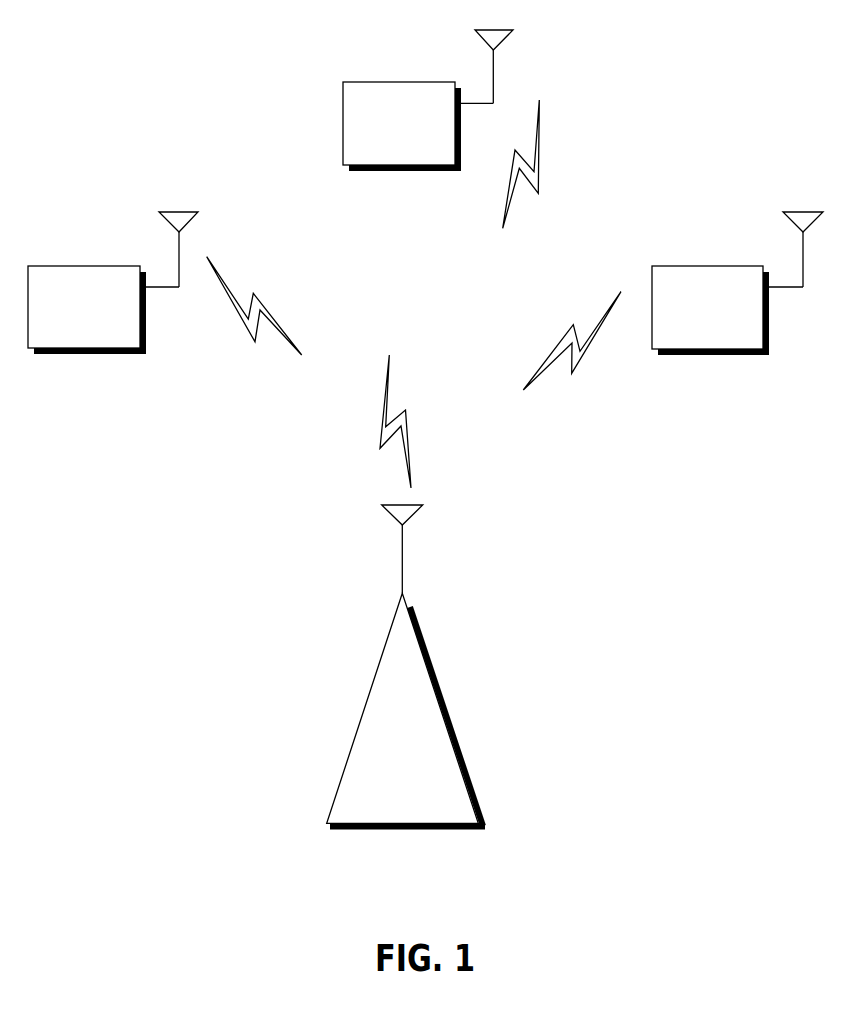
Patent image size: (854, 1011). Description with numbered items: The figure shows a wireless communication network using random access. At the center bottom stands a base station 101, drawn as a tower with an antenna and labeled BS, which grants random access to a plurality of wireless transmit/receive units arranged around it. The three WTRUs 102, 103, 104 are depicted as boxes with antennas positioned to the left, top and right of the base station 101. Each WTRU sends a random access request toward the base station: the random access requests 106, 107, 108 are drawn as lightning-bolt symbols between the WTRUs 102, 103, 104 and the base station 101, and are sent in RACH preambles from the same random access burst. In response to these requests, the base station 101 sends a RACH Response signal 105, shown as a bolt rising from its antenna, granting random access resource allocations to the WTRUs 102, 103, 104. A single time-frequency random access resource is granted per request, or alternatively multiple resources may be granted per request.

The base station 101 is at (452, 728).
The wireless transmit/receive unit 102 is at (93, 266).
The wireless transmit/receive unit 103 is at (408, 82).
The wireless transmit/receive unit 104 is at (718, 266).
The RACH Response signal 105 is at (406, 410).
The random access request 106 is at (216, 272).
The random access request 107 is at (539, 100).
The random access request 108 is at (582, 358).